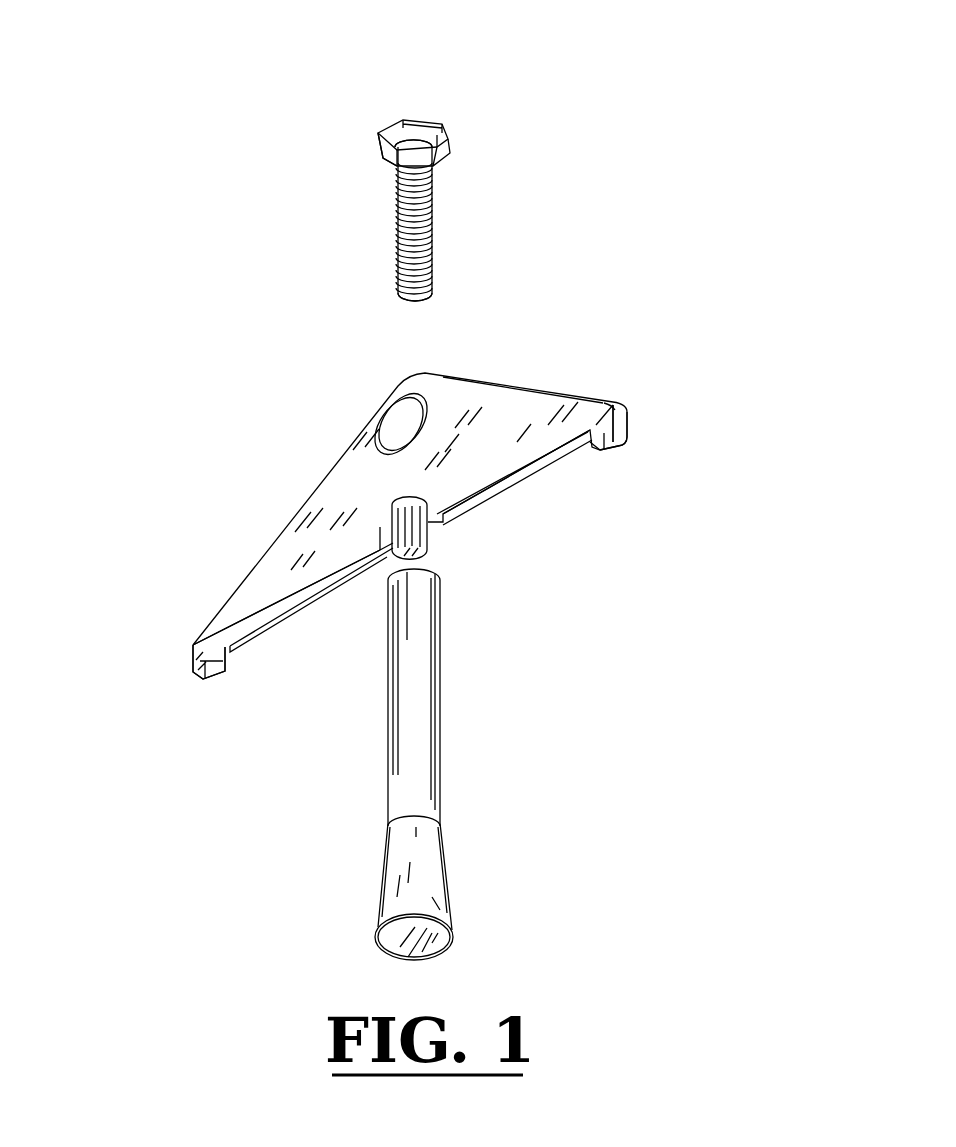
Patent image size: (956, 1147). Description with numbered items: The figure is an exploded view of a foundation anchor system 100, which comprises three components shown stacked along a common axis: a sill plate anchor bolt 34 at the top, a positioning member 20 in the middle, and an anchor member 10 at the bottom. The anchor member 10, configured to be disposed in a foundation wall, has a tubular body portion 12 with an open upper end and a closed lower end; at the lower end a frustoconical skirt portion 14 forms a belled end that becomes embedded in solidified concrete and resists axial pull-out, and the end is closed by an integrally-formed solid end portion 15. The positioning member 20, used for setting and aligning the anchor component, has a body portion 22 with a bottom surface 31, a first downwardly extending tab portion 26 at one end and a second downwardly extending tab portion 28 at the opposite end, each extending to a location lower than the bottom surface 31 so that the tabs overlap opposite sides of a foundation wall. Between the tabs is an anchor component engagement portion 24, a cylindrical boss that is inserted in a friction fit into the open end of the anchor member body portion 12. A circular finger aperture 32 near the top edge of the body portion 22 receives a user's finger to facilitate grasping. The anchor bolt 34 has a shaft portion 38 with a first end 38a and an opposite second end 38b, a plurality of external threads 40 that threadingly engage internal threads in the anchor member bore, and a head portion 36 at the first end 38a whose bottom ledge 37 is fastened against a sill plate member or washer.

The foundation anchor system 100 is at (363, 487).
The anchor member 10 is at (437, 764).
The tubular body portion 12 is at (405, 717).
The frustoconical skirt portion 14 is at (400, 870).
The solid end portion 15 is at (459, 938).
The positioning member 20 is at (435, 523).
The body portion 22 is at (333, 488).
The anchor component engagement portion 24 is at (412, 532).
The first downwardly extending tab portion 26 is at (208, 657).
The second downwardly extending tab portion 28 is at (607, 423).
The bottom surface 31 is at (533, 465).
The circular finger aperture 32 is at (398, 424).
The sill plate anchor bolt 34 is at (426, 176).
The head portion 36 is at (414, 126).
The bottom ledge 37 is at (388, 150).
The shaft portion 38 is at (403, 246).
The first end 38a is at (447, 156).
The second end 38b is at (413, 302).
The external threads 40 is at (398, 195).